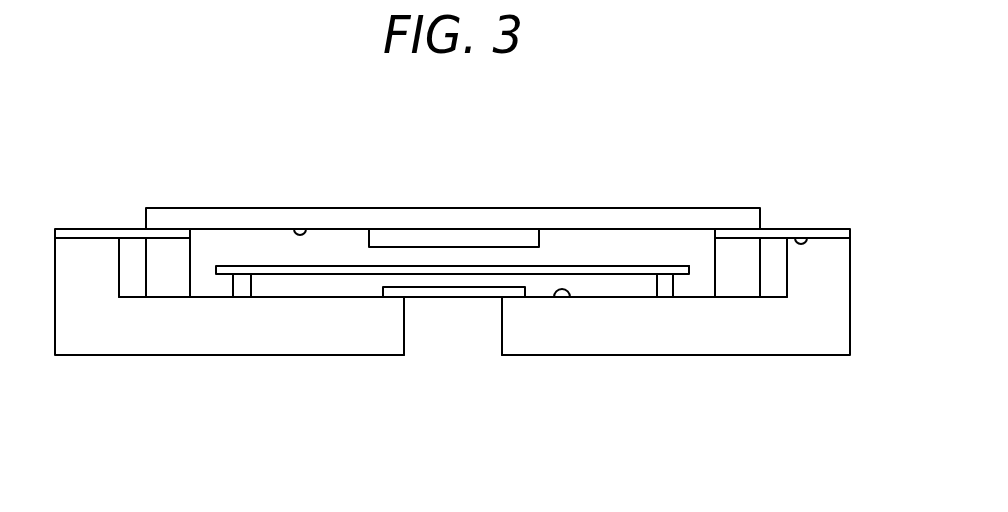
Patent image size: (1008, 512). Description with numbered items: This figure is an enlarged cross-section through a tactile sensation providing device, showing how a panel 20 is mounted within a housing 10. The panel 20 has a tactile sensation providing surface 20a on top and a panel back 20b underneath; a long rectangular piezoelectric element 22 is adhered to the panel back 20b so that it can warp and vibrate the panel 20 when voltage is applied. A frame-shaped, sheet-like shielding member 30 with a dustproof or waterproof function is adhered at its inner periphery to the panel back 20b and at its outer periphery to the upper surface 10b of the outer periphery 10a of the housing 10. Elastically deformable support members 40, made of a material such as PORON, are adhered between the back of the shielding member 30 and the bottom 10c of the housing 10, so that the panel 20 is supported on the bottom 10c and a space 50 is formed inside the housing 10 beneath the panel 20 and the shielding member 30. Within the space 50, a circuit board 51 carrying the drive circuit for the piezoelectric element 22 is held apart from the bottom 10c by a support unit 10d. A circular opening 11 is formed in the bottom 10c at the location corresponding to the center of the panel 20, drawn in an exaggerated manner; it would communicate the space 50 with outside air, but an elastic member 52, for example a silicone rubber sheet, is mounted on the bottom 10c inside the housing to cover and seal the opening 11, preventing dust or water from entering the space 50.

The housing 10 is at (815, 358).
The outer periphery 10a is at (838, 247).
The upper surface 10b is at (802, 238).
The bottom 10c is at (562, 297).
The support unit 10d is at (242, 293).
The opening 11 is at (404, 333).
The panel 20 is at (546, 218).
The tactile sensation providing surface 20a is at (270, 208).
The panel back 20b is at (307, 229).
The piezoelectric element 22 is at (442, 240).
The shielding member 30 is at (100, 229).
The support member 40 is at (167, 288).
The space 50 is at (230, 246).
The circuit board 51 is at (610, 266).
The elastic member 52 is at (452, 297).